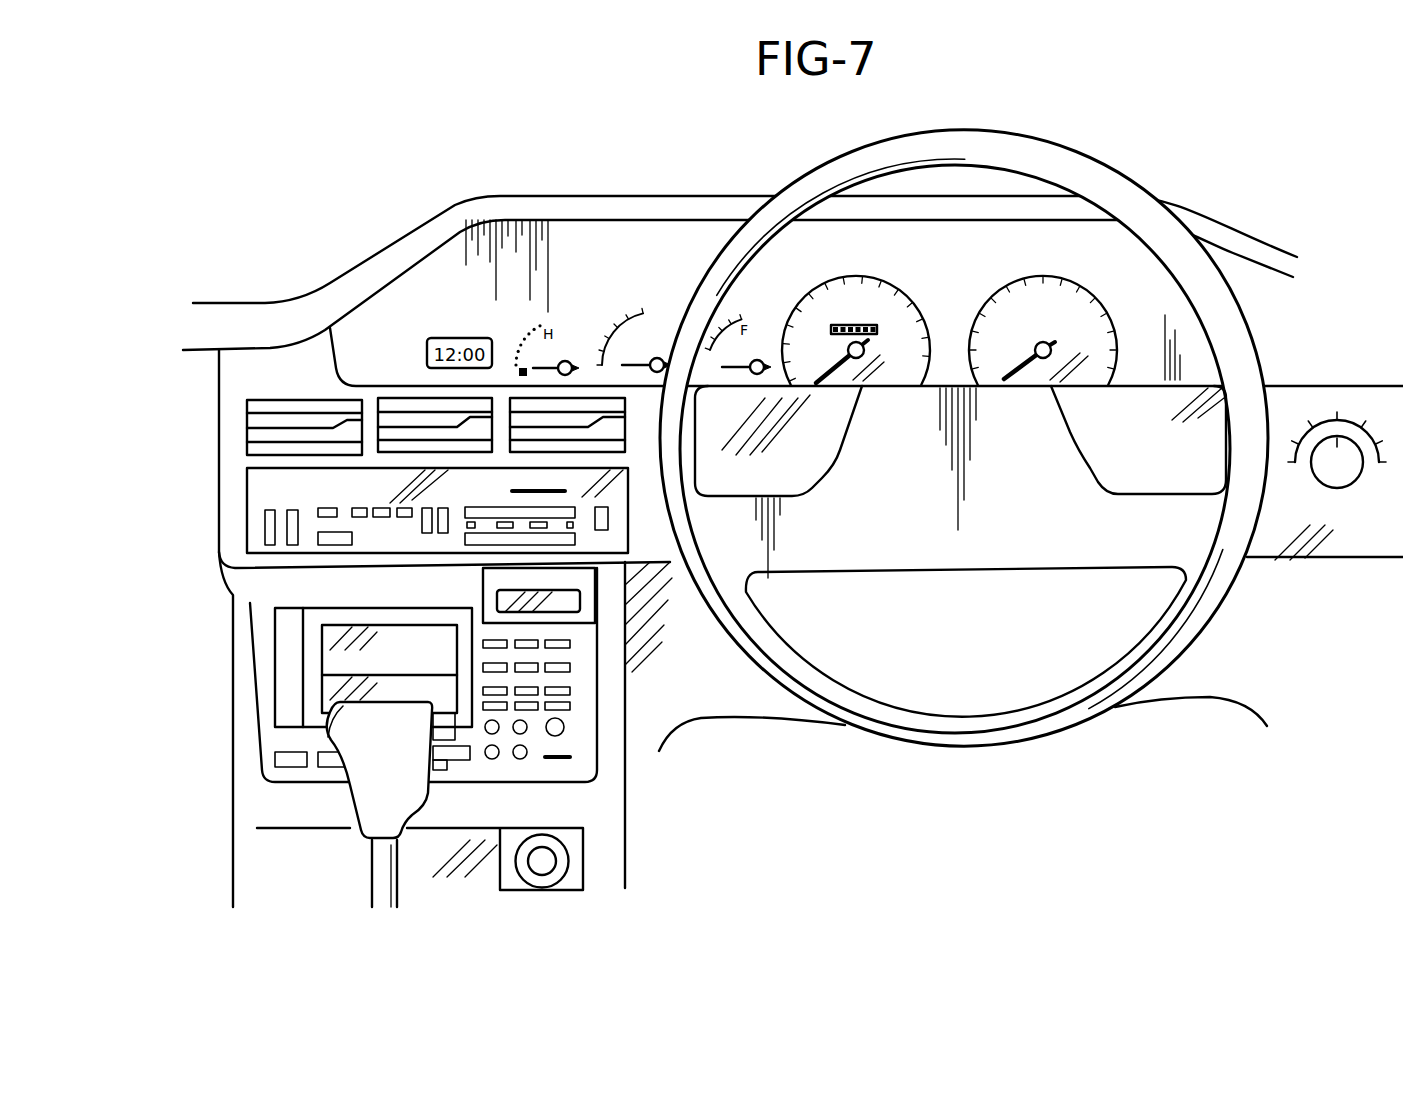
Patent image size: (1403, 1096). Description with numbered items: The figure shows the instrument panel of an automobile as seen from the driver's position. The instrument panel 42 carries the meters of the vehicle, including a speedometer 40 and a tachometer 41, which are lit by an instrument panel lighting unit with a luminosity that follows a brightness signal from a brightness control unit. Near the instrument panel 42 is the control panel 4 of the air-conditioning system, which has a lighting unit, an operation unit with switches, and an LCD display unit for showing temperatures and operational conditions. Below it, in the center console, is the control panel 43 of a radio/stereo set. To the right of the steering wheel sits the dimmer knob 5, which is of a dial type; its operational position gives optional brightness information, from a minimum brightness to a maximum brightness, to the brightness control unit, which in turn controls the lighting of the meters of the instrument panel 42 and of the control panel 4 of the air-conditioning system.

The control panel of the air-conditioning system 4 is at (247, 508).
The dimmer knob 5 is at (1352, 478).
The speedometer 40 is at (893, 286).
The tachometer 41 is at (1076, 278).
The instrument panel 42 is at (667, 247).
The control panel of a radio/stereo set 43 is at (262, 702).